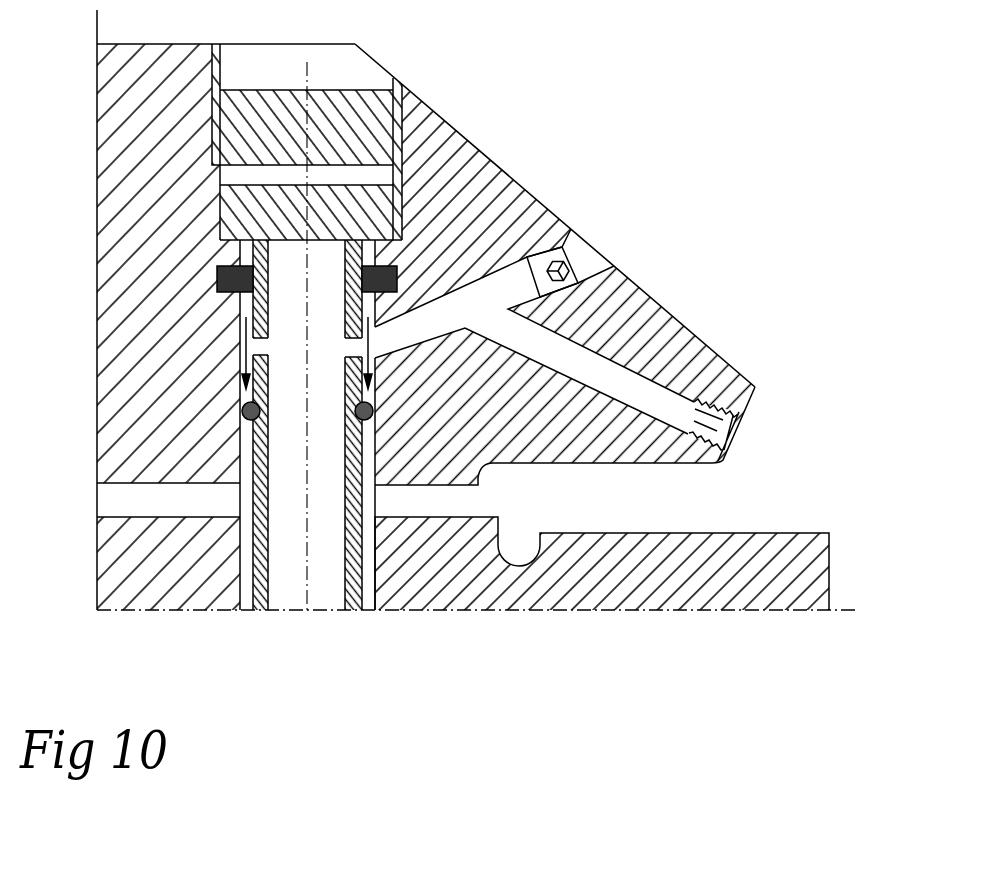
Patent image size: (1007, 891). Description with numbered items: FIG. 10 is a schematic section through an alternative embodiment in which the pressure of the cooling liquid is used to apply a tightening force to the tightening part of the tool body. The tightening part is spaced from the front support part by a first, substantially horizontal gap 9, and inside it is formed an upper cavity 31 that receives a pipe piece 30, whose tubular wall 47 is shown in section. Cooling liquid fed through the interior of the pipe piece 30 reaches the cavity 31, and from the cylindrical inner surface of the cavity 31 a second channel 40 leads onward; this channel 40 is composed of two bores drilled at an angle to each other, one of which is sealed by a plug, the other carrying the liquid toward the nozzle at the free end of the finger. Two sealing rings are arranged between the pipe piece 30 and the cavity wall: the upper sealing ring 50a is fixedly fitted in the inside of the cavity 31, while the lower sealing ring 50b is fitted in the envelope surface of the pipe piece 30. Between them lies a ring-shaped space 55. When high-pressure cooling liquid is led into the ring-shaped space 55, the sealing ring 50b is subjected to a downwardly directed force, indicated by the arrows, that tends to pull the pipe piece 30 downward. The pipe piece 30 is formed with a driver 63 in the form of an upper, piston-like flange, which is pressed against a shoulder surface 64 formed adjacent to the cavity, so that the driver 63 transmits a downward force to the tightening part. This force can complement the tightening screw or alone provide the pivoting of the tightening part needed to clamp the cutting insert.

The first, substantially horizontal gap 9 is at (445, 503).
The pipe piece 30 is at (250, 558).
The upper cavity 31 is at (372, 458).
The second channel 40 is at (500, 292).
The sleeve 47 is at (256, 344).
The upper sealing ring 50a is at (215, 274).
The sealing ring 50b is at (244, 420).
The ring-shaped space 55 is at (246, 304).
The driver 63 is at (380, 213).
The shoulder surface 64 is at (228, 240).